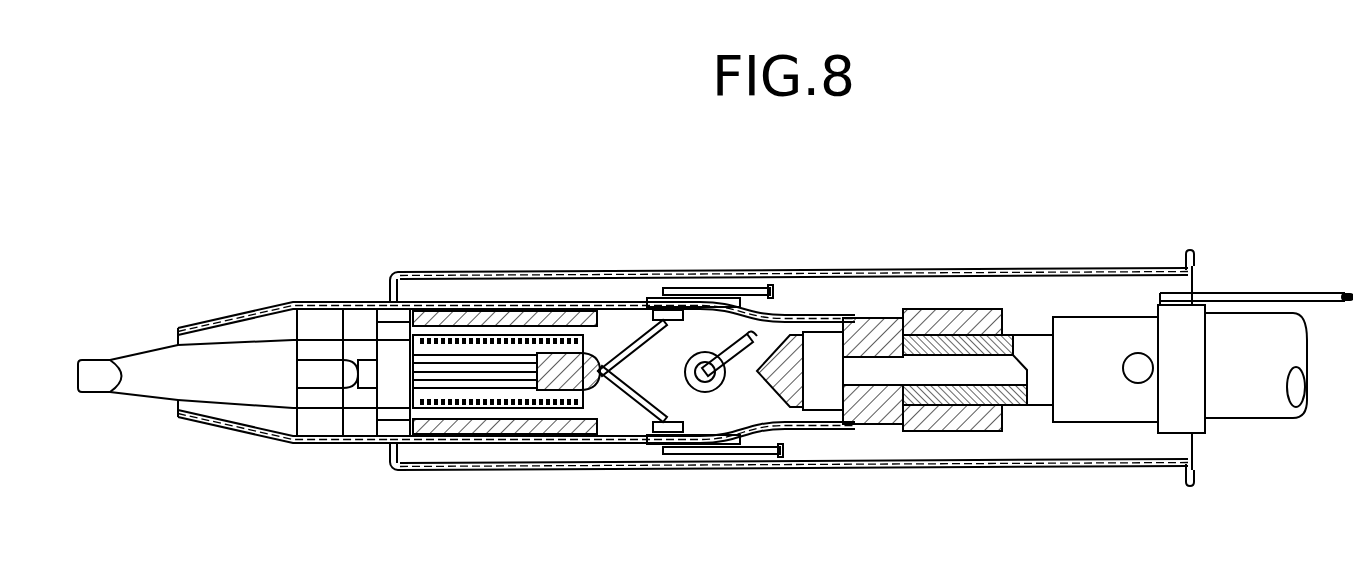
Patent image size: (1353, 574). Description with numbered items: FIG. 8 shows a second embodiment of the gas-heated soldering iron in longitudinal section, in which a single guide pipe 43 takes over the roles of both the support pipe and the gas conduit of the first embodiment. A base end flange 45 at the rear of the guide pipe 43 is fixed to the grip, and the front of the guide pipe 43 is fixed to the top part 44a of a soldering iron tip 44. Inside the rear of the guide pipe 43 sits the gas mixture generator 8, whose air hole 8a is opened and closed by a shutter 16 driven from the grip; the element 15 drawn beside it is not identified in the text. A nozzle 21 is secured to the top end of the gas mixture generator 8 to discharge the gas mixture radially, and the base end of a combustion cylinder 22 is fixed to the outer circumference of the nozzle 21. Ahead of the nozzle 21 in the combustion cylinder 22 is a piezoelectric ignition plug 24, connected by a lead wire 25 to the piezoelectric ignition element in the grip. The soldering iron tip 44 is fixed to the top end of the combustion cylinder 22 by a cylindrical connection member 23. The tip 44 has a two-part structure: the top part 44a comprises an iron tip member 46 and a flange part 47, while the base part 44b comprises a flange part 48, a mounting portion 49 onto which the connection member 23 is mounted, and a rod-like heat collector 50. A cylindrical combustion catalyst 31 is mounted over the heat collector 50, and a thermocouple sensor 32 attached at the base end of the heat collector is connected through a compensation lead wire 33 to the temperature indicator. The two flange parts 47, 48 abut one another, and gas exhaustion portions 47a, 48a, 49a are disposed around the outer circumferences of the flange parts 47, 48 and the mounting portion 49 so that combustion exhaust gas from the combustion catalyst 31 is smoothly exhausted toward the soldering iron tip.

The soldering iron tip 44 is at (279, 214).
The top part 44a is at (158, 287).
The base part 44b is at (395, 213).
The iron tip member 46 is at (160, 390).
The flange part 47 is at (313, 427).
The gas exhaustion portion 47a is at (310, 345).
The flange part 48 is at (360, 432).
The gas exhaustion portion 48a is at (350, 340).
The mounting portion 49 is at (393, 415).
The gas exhaustion portion 49a is at (385, 335).
The heat collector 50 is at (500, 360).
The combustion catalyst 31 is at (500, 417).
The connection member 23 is at (573, 437).
The sensor 32 is at (603, 365).
The compensation lead wire 33 is at (717, 290).
The piezoelectric ignition plug 24 is at (702, 392).
The lead wire 25 is at (745, 340).
The combustion cylinder 22 is at (830, 410).
The nozzle 21 is at (962, 431).
The guide pipe 43 is at (953, 268).
The base end flange 45 is at (1192, 262).
The gas mixture generator 8 is at (1080, 335).
The air hole 8a is at (1138, 383).
The shutter 16 is at (1187, 413).
The cord 15 is at (1300, 293).